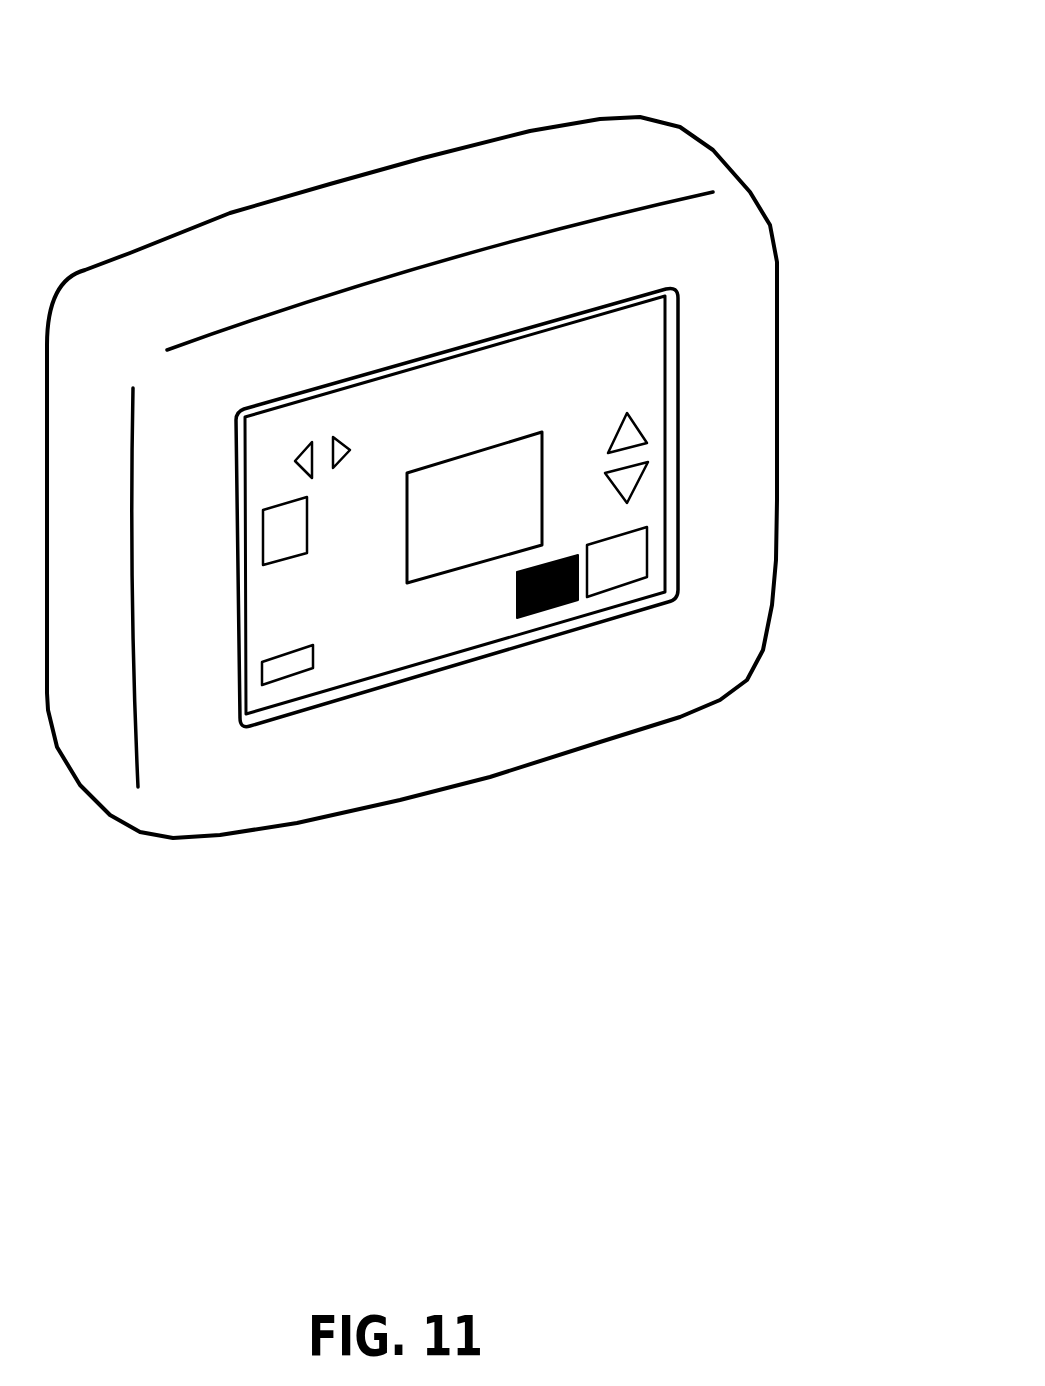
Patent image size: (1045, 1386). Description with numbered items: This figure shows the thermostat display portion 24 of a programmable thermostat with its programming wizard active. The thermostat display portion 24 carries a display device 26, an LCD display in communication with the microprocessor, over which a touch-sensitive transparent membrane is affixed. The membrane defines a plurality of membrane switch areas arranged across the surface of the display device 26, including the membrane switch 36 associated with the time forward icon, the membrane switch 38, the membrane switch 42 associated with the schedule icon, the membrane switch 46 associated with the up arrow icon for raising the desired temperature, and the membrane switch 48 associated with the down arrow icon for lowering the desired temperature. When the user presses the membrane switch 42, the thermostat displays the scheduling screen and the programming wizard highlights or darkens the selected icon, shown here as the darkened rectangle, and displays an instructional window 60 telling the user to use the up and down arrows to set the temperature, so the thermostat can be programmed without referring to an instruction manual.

The thermostat display portion 24 is at (713, 148).
The display device 26 is at (653, 390).
The membrane switch 36 is at (338, 442).
The membrane switch 38 is at (308, 442).
The membrane switch 42 is at (550, 610).
The membrane switch 46 is at (643, 437).
The membrane switch 48 is at (643, 477).
The message box 60 is at (420, 582).